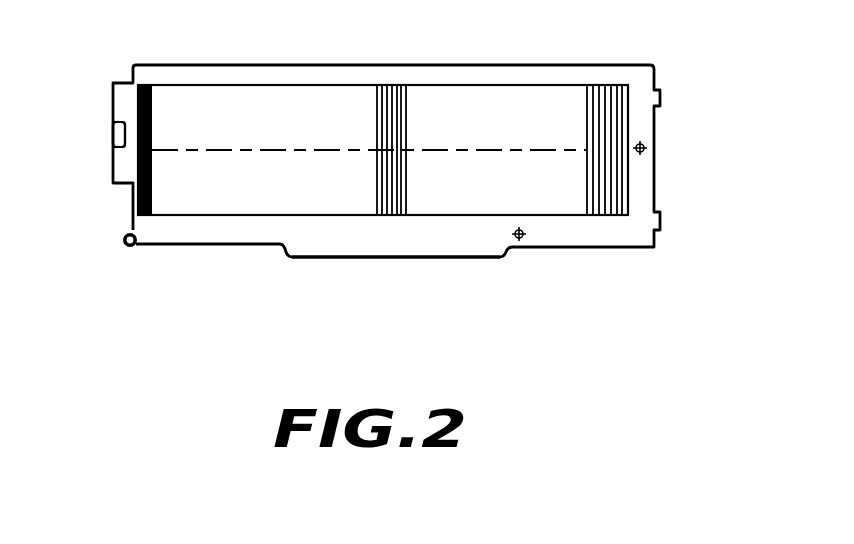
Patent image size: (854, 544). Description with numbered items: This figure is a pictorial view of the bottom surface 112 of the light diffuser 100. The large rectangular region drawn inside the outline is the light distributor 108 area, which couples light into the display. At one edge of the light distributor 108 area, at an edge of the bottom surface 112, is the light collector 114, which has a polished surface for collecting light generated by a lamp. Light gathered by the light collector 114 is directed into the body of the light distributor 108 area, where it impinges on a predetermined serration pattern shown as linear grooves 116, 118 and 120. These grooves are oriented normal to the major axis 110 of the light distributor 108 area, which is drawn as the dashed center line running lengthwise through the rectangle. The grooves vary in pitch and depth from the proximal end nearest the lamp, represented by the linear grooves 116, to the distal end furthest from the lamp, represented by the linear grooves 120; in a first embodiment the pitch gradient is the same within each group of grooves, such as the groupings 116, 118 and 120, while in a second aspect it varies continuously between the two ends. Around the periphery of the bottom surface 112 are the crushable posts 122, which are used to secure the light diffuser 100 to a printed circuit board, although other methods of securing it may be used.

The light diffuser 100 is at (686, 353).
The light distributor area 108 is at (275, 98).
The major axis 110 is at (232, 150).
The bottom surface 112 is at (395, 242).
The light collector 114 is at (110, 137).
The linear grooves 116 is at (155, 98).
The linear grooves 118 is at (378, 107).
The linear grooves 120 is at (585, 110).
The crushable posts 122 is at (644, 148).